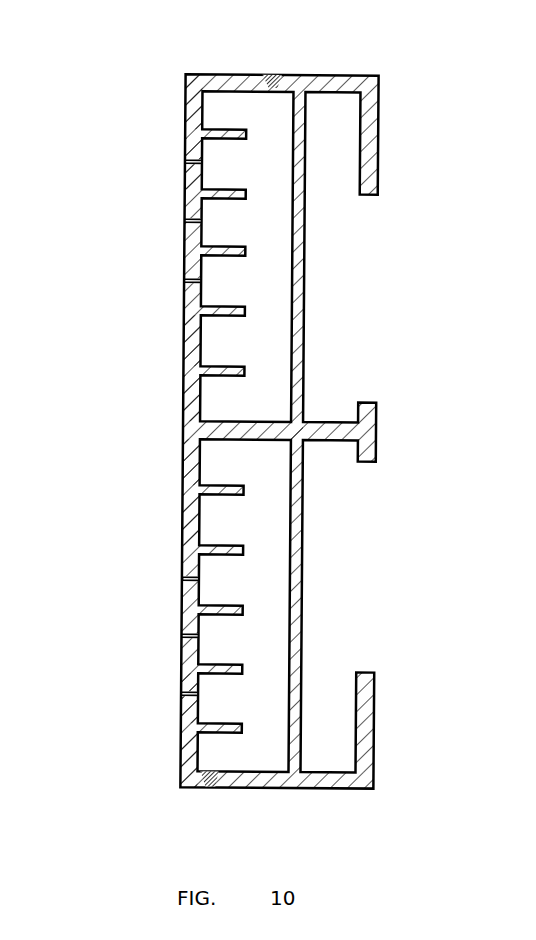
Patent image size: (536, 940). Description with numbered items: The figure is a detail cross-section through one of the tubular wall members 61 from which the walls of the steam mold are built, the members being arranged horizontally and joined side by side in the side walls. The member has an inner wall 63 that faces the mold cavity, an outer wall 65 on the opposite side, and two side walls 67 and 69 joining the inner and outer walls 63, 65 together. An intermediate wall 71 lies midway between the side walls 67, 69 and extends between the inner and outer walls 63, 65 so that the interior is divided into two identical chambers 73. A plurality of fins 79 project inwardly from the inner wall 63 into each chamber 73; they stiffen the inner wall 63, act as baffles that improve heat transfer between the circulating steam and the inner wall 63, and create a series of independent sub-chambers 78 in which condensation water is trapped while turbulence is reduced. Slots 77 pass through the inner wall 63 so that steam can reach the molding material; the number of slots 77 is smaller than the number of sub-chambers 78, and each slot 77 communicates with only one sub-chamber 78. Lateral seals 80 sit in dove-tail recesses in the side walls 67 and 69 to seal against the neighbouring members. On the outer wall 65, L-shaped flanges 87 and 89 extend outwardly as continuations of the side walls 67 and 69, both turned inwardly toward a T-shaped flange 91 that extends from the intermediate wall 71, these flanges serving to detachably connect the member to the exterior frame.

The tubular wall member 61 is at (127, 436).
The inner wall 63 is at (184, 341).
The outer wall 65 is at (305, 288).
The side wall 67 is at (297, 75).
The side wall 69 is at (280, 788).
The intermediate wall 71 is at (291, 417).
The chamber 73 is at (268, 227).
The slot 77 is at (184, 279).
The sub-chamber 78 is at (228, 156).
The fin 79 is at (234, 186).
The lateral seal 80 is at (269, 75).
The L-shaped flange 87 is at (378, 149).
The L-shaped flange 89 is at (375, 746).
The T-shaped flange 91 is at (375, 421).